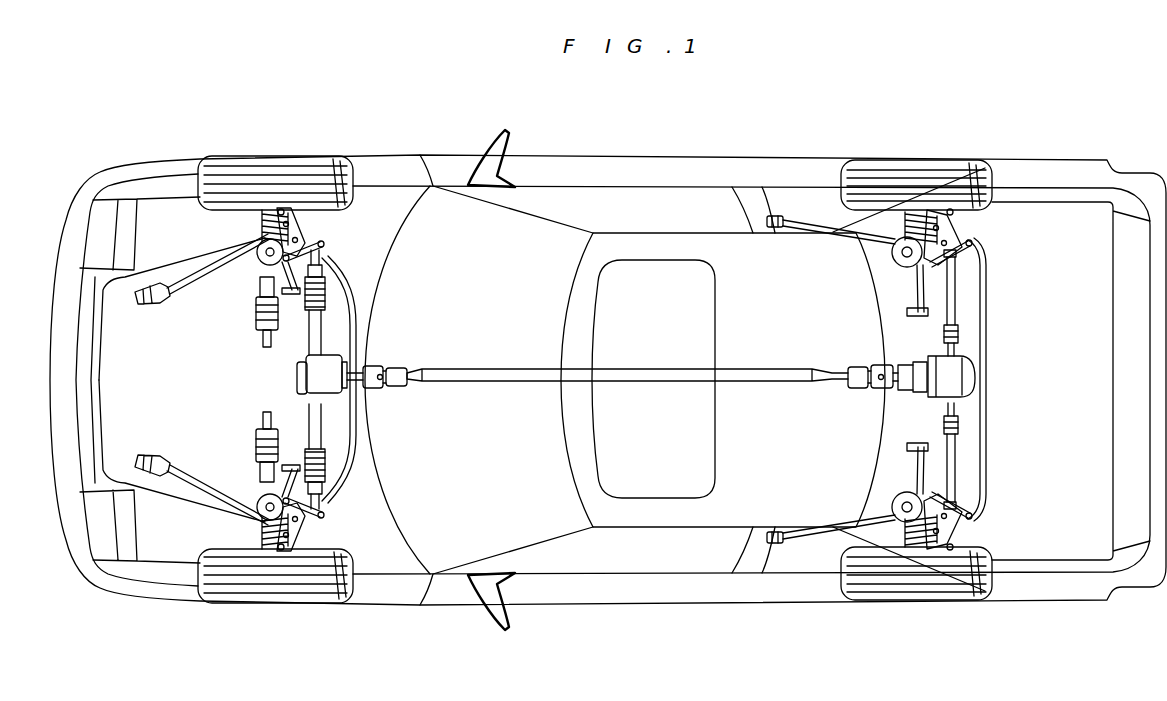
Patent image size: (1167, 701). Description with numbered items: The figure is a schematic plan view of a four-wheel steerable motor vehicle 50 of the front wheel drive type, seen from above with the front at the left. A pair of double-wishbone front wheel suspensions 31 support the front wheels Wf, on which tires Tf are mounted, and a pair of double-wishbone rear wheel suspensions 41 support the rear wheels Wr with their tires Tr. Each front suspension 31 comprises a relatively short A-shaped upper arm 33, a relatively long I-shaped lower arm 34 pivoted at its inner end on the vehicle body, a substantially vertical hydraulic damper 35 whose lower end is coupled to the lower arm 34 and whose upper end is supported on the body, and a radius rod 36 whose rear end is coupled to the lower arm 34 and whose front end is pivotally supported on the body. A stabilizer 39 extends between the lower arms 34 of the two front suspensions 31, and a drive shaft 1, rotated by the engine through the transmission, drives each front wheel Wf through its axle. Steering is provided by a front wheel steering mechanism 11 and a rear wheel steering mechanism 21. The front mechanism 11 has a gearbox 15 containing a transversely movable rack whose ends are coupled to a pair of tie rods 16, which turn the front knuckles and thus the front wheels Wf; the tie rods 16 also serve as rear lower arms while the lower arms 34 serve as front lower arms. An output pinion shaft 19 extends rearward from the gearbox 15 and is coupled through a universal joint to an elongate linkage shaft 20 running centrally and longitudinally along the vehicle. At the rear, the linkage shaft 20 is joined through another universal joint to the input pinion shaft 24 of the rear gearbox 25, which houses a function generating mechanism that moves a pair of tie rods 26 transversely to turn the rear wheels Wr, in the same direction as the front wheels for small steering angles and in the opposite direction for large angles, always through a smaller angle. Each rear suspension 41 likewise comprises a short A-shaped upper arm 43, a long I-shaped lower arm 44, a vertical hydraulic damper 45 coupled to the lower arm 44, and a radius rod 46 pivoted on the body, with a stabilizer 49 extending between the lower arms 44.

The drive shaft 1 is at (255, 310).
The front wheel steering mechanism 11 is at (301, 379).
The gearbox 15 is at (298, 366).
The tie rods 16 is at (323, 252).
The output pinion shaft 19 is at (372, 369).
The linkage shaft 20 is at (668, 384).
The rear wheel steering mechanism 21 is at (977, 378).
The input pinion shaft 24 is at (897, 368).
The gearbox 25 is at (960, 420).
The tie rods 26 is at (958, 300).
The front wheel suspensions 31 is at (284, 378).
The upper arm 33 is at (315, 226).
The lower arm 34 is at (323, 272).
The hydraulic damper 35 is at (256, 256).
The radius rod 36 is at (178, 292).
The stabilizer 39 is at (358, 409).
The rear wheel suspensions 41 is at (933, 379).
The upper arm 43 is at (967, 236).
The lower arm 44 is at (917, 282).
The hydraulic damper 45 is at (892, 262).
The radius rod 46 is at (800, 228).
The stabilizer 49 is at (988, 330).
The four-wheel steerable motor vehicle 50 is at (688, 154).
The front wheels Wf is at (271, 154).
The tires Tf is at (343, 156).
The rear wheels Wr is at (917, 158).
The tires Tr is at (978, 160).